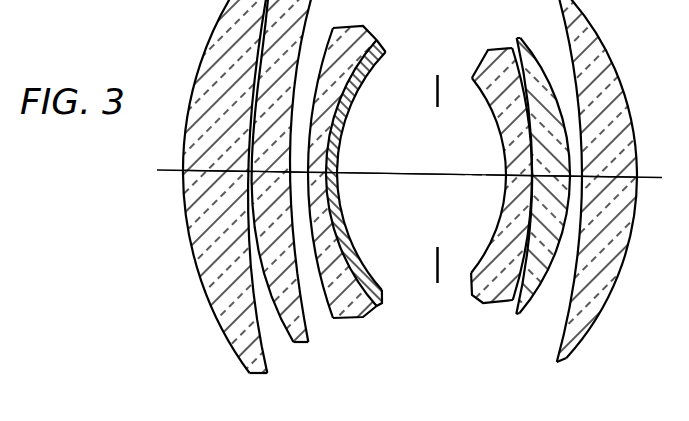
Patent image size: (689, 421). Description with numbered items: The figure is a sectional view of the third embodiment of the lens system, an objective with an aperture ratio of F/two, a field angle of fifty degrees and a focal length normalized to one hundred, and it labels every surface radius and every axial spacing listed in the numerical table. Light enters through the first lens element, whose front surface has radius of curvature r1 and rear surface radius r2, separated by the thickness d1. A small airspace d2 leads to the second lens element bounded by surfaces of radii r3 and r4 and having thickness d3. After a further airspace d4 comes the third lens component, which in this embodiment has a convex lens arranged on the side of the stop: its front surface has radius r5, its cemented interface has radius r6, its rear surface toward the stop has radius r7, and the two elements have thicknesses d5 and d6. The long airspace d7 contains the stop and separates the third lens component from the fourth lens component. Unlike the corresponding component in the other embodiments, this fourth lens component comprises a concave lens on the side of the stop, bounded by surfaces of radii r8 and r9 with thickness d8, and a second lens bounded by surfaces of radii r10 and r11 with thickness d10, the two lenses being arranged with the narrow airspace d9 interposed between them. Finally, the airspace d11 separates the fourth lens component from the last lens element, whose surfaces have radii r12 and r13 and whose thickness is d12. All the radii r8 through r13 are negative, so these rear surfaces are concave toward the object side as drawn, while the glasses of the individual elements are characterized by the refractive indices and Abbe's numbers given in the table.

The radius of curvature of first surface r1 is at (233, 350).
The radius of curvature of second surface r2 is at (264, 358).
The radius of curvature of third surface r3 is at (293, 346).
The radius of curvature of fourth surface r4 is at (312, 341).
The radius of curvature of fifth surface r5 is at (335, 320).
The radius of curvature of sixth surface r6 is at (372, 310).
The radius of curvature of seventh surface r7 is at (383, 296).
The radius of curvature of eighth surface r8 is at (472, 268).
The radius of curvature of ninth surface r9 is at (510, 302).
The radius of curvature of tenth surface r10 is at (514, 316).
The radius of curvature of eleventh surface r11 is at (524, 313).
The radius of curvature of twelfth surface r12 is at (557, 351).
The radius of curvature of thirteenth surface r13 is at (586, 362).
The thickness of first lens element d1 is at (216, 170).
The airspace between first and second lens elements d2 is at (246, 165).
The thickness of second lens element d3 is at (266, 169).
The airspace between second lens element and third lens component d4 is at (290, 168).
The thickness of front element of third lens component d5 is at (317, 170).
The thickness of convex lens of third lens component d6 is at (331, 170).
The airspace between third and fourth lens components d7 is at (412, 173).
The thickness of concave lens of fourth lens component d8 is at (515, 174).
The narrow airspace within fourth lens component d9 is at (527, 174).
The thickness of second lens of fourth lens component d10 is at (550, 175).
The airspace between fourth lens component and last lens element d11 is at (572, 176).
The thickness of last lens element d12 is at (603, 176).